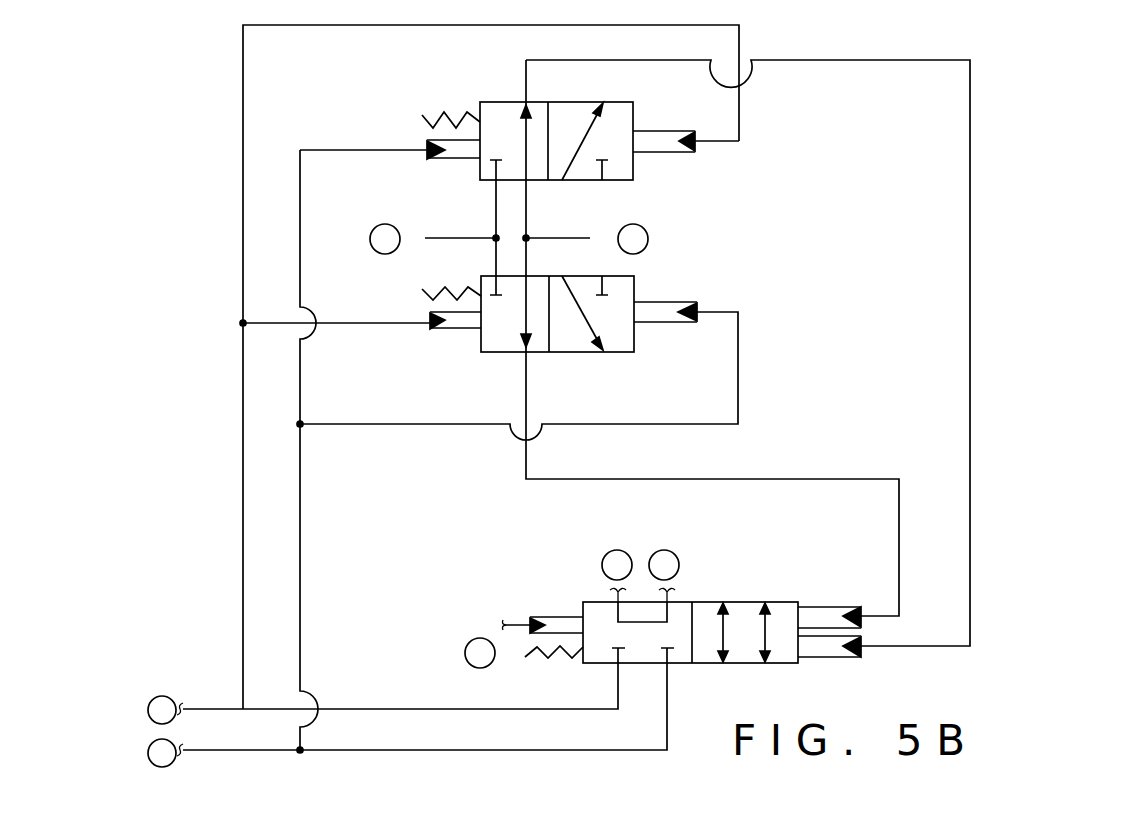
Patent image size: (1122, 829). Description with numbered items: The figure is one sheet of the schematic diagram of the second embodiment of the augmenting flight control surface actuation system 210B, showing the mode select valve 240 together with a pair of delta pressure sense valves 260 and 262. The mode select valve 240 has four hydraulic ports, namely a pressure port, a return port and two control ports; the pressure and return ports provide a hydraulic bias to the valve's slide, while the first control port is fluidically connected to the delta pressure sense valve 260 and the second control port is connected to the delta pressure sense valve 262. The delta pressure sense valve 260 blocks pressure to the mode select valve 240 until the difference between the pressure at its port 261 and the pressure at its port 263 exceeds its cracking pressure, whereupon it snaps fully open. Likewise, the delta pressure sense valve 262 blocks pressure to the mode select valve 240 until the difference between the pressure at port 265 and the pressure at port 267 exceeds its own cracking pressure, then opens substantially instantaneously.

The augmenting flight control surface actuation system (second embodiment, portion s 210B is at (1022, 122).
The mode select valve 240 is at (747, 602).
The delta pressure sense valve 260 is at (588, 353).
The port 261 is at (697, 303).
The delta pressure sense valve 262 is at (583, 183).
The port 263 is at (430, 328).
The port 265 is at (695, 152).
The port 267 is at (427, 143).